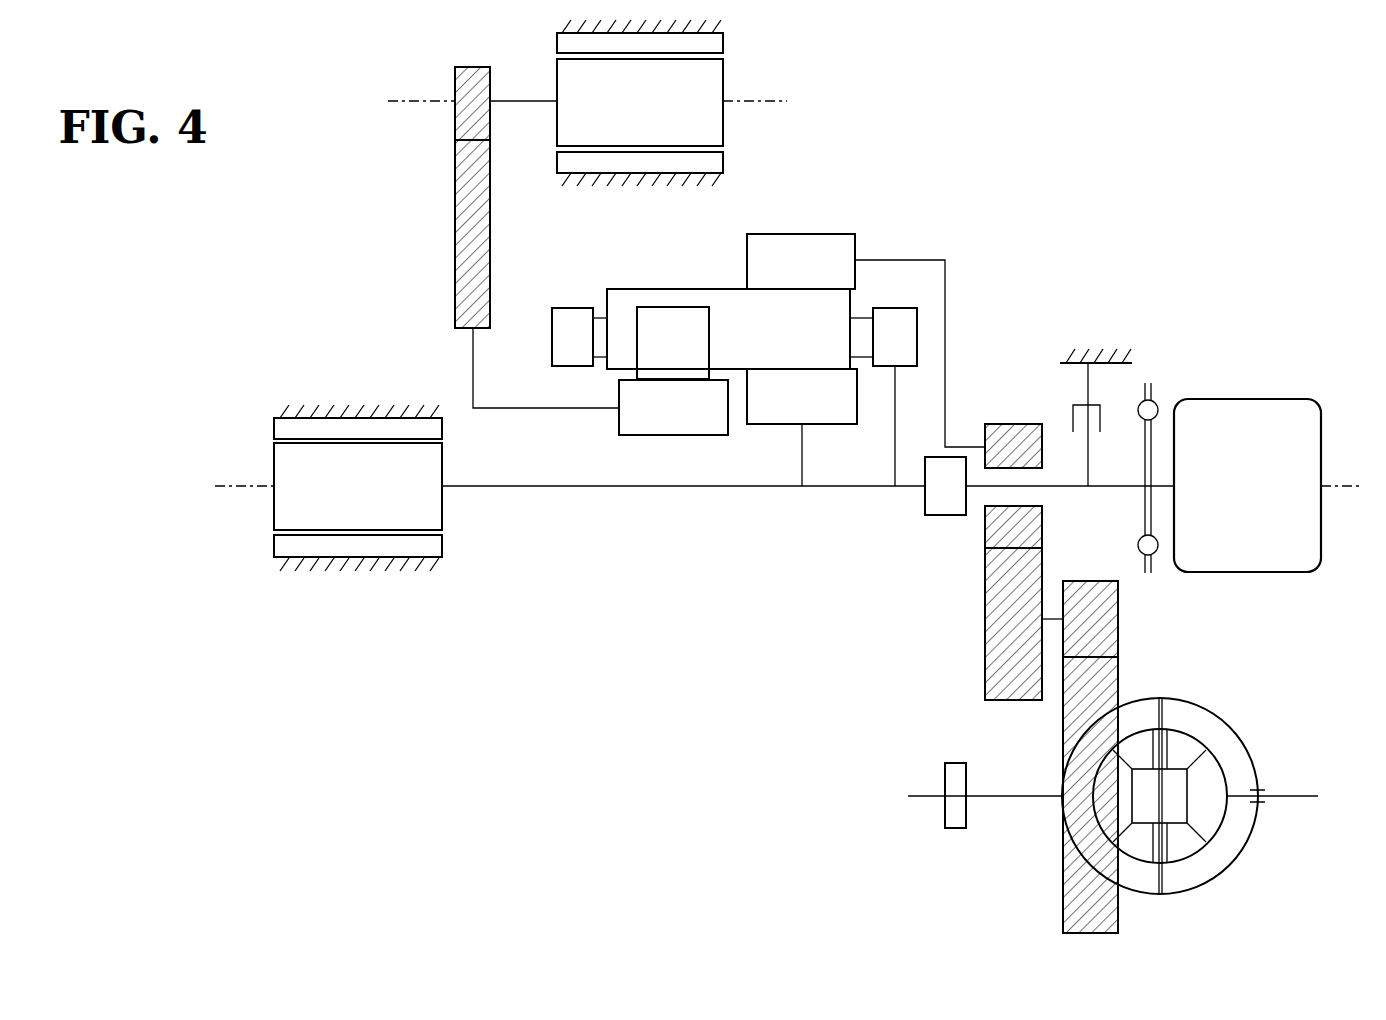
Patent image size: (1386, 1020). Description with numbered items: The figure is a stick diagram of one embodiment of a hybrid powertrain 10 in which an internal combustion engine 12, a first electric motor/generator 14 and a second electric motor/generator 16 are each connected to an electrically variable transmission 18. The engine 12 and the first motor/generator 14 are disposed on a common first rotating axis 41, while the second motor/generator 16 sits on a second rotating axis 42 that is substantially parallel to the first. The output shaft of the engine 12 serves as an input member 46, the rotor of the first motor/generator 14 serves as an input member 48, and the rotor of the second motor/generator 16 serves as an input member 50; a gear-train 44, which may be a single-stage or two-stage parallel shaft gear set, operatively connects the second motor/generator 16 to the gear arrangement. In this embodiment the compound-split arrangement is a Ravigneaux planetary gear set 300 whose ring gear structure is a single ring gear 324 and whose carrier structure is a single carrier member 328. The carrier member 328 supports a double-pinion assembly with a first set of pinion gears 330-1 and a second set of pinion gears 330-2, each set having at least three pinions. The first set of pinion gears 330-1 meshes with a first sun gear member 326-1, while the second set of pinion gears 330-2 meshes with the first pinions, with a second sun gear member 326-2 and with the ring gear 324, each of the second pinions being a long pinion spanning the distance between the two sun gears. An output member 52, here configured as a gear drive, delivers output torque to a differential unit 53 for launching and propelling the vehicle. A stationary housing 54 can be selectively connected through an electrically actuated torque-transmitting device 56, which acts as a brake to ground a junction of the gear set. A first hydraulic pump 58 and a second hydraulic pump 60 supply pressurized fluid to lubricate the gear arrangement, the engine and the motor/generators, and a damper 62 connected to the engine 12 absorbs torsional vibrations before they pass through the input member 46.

The hybrid powertrain 10 is at (1207, 218).
The internal combustion engine 12 is at (1268, 485).
The first electric motor/generator 14 is at (358, 488).
The second electric motor/generator 16 is at (672, 103).
The electrically variable transmission 18 is at (952, 170).
The first rotating axis 41 is at (243, 488).
The second rotating axis 42 is at (409, 99).
The gear-train 44 is at (446, 192).
The input member 46 is at (1100, 488).
The input member 48 is at (528, 489).
The input member 50 is at (520, 100).
The output member 52 is at (974, 549).
The differential unit 53 is at (1216, 698).
The housing 54 is at (1098, 350).
The torque-transmitting device 56 is at (1103, 418).
The first hydraulic pump 58 is at (947, 517).
The second hydraulic pump 60 is at (955, 832).
The damper 62 is at (1137, 545).
The Ravigneaux planetary gear set 300 is at (718, 240).
The ring gear 324 is at (866, 340).
The first sun gear member 326-1 is at (600, 381).
The second sun gear member 326-2 is at (802, 427).
The carrier member 328 is at (573, 307).
The first set of pinion gears 330-1 is at (673, 343).
The second set of pinion gears 330-2 is at (662, 288).